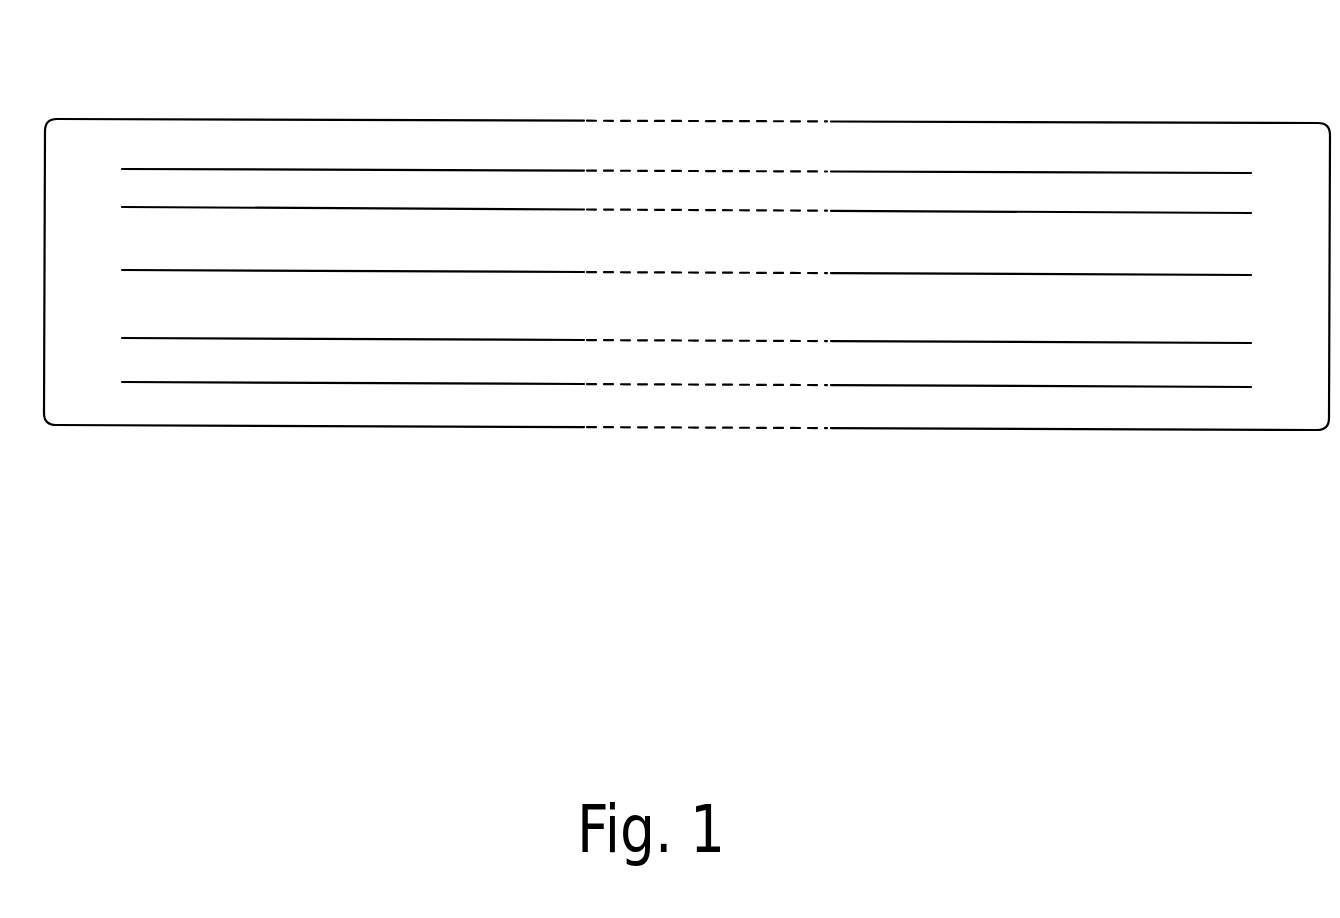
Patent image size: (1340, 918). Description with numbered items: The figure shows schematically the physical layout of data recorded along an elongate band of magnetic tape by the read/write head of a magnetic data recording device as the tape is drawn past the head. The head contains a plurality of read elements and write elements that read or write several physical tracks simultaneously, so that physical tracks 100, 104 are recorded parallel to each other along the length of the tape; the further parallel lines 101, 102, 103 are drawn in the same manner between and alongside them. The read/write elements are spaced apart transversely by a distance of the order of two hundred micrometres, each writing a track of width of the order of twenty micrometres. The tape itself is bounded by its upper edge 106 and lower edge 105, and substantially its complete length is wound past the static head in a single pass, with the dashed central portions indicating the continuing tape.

The physical track 100 is at (953, 274).
The conductor line 101 is at (544, 340).
The conductor line 102 is at (1090, 213).
The conductor line 103 is at (308, 383).
The physical track 104 is at (990, 171).
The lower casing edge 105 is at (485, 427).
The upper casing edge 106 is at (305, 118).